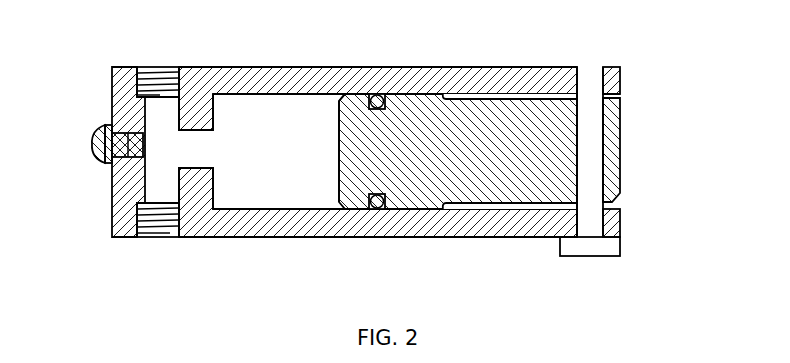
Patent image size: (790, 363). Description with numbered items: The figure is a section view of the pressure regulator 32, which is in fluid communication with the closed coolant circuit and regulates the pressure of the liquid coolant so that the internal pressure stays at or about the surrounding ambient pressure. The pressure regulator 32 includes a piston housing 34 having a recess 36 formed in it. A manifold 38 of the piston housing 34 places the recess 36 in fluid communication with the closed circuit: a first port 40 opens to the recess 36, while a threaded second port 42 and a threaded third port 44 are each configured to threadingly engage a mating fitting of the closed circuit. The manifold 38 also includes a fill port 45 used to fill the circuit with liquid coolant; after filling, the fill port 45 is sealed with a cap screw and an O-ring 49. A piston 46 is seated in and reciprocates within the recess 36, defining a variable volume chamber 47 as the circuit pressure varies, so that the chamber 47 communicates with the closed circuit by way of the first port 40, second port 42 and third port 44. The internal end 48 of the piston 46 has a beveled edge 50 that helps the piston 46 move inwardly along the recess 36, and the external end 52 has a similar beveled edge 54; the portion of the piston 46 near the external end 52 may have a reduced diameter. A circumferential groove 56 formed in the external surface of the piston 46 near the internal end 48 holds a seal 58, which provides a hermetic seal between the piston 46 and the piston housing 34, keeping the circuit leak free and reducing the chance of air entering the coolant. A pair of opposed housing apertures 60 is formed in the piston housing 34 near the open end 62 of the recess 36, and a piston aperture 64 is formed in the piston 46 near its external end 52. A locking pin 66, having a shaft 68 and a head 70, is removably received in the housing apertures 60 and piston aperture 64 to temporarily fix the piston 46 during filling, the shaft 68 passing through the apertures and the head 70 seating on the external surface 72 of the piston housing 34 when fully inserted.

The pressure regulator 32 is at (250, 255).
The piston housing 34 is at (362, 239).
The recess 36 is at (243, 97).
The manifold 38 is at (162, 150).
The first port 40 is at (205, 134).
The second port 42 is at (146, 80).
The third port 44 is at (150, 225).
The fill port 45 is at (124, 159).
The piston 46 is at (486, 195).
The variable volume chamber 47 is at (84, 174).
The internal end 48 is at (337, 170).
The O-ring 49 is at (103, 124).
The beveled edge 50 is at (344, 95).
The external end 52 is at (620, 113).
The beveled edge 54 is at (617, 97).
The groove 56 is at (386, 104).
The seal 58 is at (379, 96).
The housing apertures 60 is at (603, 80).
The open end 62 is at (620, 87).
The piston aperture 64 is at (600, 160).
The locking pin 66 is at (592, 182).
The shaft 68 is at (592, 140).
The head 70 is at (610, 250).
The external surface 72 is at (515, 238).